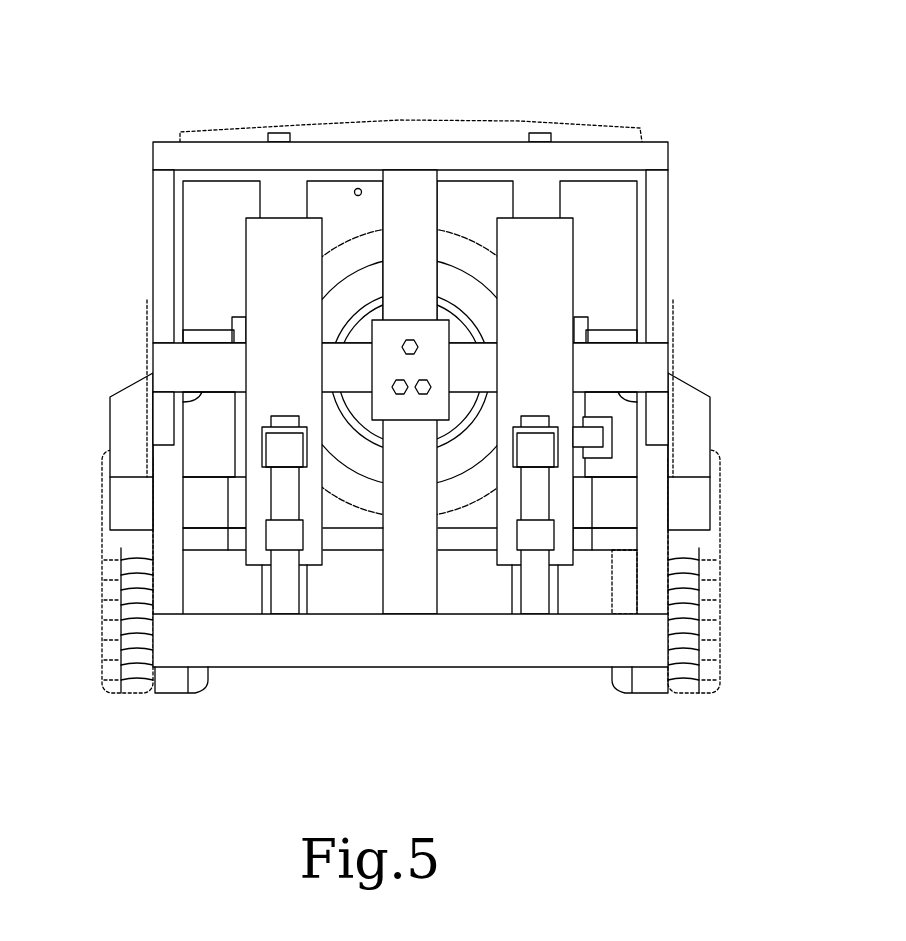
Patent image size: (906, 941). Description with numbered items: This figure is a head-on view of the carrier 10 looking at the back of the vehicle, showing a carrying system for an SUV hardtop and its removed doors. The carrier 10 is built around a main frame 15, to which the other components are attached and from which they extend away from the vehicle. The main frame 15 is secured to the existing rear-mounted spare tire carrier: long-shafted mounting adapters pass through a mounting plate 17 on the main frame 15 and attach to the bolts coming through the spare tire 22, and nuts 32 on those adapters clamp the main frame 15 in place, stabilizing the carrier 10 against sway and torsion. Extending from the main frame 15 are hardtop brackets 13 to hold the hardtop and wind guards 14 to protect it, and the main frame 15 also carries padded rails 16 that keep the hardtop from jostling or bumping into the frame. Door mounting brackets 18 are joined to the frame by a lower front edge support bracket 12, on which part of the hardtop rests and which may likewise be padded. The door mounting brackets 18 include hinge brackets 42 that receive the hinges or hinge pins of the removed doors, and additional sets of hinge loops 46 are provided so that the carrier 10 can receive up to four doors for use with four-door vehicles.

The carrier 10 is at (150, 110).
The lower front edge support bracket 12 is at (357, 653).
The hardtop brackets 13 is at (165, 410).
The wind guards 14 is at (160, 238).
The main frame 15 is at (360, 160).
The padded rails 16 is at (285, 233).
The mounting plate 17 is at (417, 410).
The door mounting brackets 18 is at (282, 573).
The spare tire 22 is at (455, 250).
The nuts 32 is at (430, 340).
The hinge brackets 42 is at (262, 447).
The hinge loops 46 is at (327, 480).